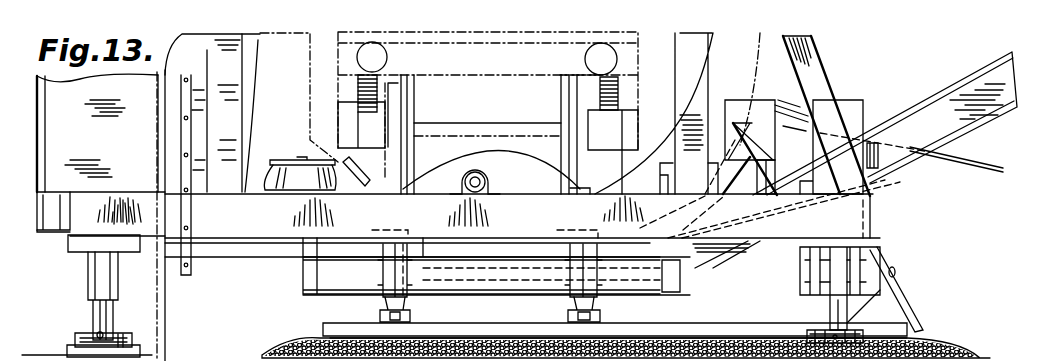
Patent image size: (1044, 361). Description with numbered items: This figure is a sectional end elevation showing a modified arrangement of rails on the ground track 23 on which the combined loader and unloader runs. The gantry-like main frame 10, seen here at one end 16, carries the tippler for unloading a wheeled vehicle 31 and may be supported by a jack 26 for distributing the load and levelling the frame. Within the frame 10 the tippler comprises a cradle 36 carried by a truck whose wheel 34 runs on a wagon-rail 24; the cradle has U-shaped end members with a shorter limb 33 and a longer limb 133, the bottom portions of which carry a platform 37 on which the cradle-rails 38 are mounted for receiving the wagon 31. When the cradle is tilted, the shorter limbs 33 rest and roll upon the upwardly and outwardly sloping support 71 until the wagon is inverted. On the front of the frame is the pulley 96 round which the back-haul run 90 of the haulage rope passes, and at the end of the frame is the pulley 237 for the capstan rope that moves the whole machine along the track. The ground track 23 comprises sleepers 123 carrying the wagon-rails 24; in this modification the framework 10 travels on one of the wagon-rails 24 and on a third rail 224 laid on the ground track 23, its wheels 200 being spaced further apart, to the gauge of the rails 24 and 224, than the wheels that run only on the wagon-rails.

The main frame 10 is at (65, 247).
The jack 26 is at (84, 301).
The end of the frame 16 is at (212, 242).
The pulley 237 is at (282, 167).
The longer limb of the cradle end member 133 is at (347, 111).
The wheeled vehicle 31 is at (494, 134).
The cradle-rails 38 is at (491, 165).
The platform 37 is at (519, 194).
The cradle 36 is at (641, 170).
The shorter limb of the cradle end member 33 is at (690, 98).
The pulley 96 is at (804, 115).
The sloping support 71 is at (918, 100).
The back-haul run 90 is at (977, 160).
The ground track 23 is at (302, 320).
The wheel truck 200 is at (383, 297).
The rail 24 is at (522, 305).
The wheel 34 is at (575, 265).
The sleeper 123 is at (667, 325).
The third rail 224 is at (823, 322).